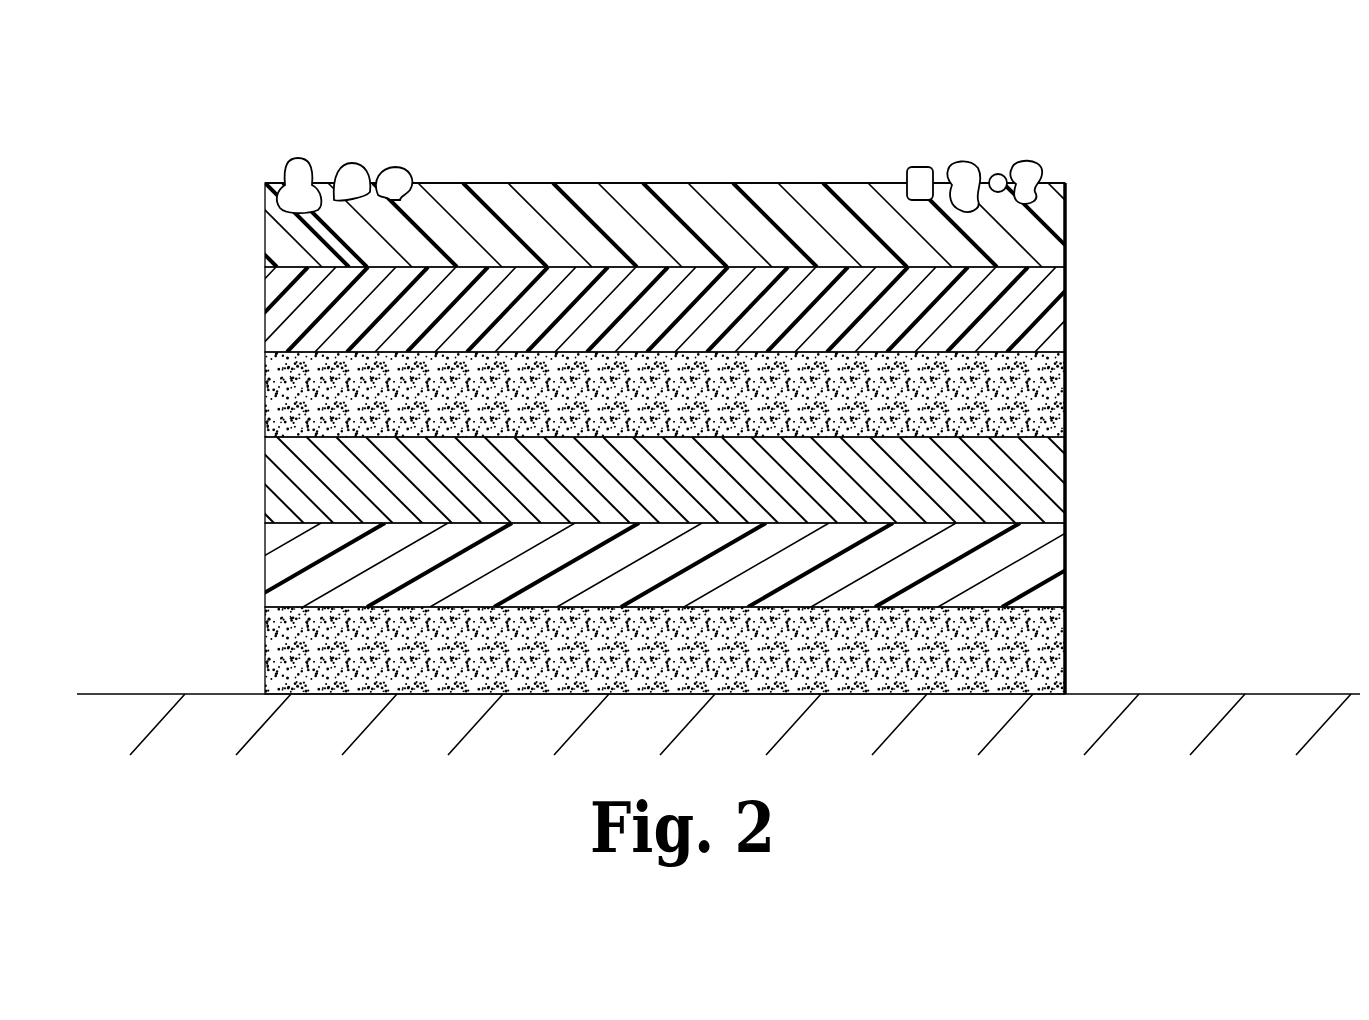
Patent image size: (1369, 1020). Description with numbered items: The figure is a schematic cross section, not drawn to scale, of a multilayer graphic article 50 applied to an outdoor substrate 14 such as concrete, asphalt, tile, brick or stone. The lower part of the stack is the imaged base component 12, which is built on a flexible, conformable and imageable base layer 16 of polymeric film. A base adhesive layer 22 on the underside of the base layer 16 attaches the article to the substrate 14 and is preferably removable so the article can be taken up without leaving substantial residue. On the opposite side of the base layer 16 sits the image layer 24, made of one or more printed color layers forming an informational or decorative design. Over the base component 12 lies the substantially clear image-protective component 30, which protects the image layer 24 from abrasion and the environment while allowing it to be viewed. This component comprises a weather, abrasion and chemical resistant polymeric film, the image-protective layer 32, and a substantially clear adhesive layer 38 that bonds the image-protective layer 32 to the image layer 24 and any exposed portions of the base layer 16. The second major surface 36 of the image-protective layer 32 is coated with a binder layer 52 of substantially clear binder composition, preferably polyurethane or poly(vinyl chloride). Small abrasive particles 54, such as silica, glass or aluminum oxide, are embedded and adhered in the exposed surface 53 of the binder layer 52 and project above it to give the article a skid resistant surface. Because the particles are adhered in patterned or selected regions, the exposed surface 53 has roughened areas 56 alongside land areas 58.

The graphic article 50 is at (125, 130).
The exposed surface of the binder layer 53 is at (262, 183).
The abrasive particles 54 is at (297, 163).
The roughened areas 56 is at (372, 178).
The land areas 58 is at (682, 182).
The second major surface of the image-protective layer 36 is at (296, 263).
The binder layer 52 is at (1030, 230).
The image-protective layer 32 is at (1032, 318).
The adhesive layer 38 is at (1015, 392).
The image-protective component 30 is at (1205, 180).
The image layer 24 is at (1012, 485).
The base layer 16 is at (985, 567).
The base adhesive layer 22 is at (1005, 645).
The base component 12 is at (1207, 440).
The outdoor substrate 14 is at (160, 694).